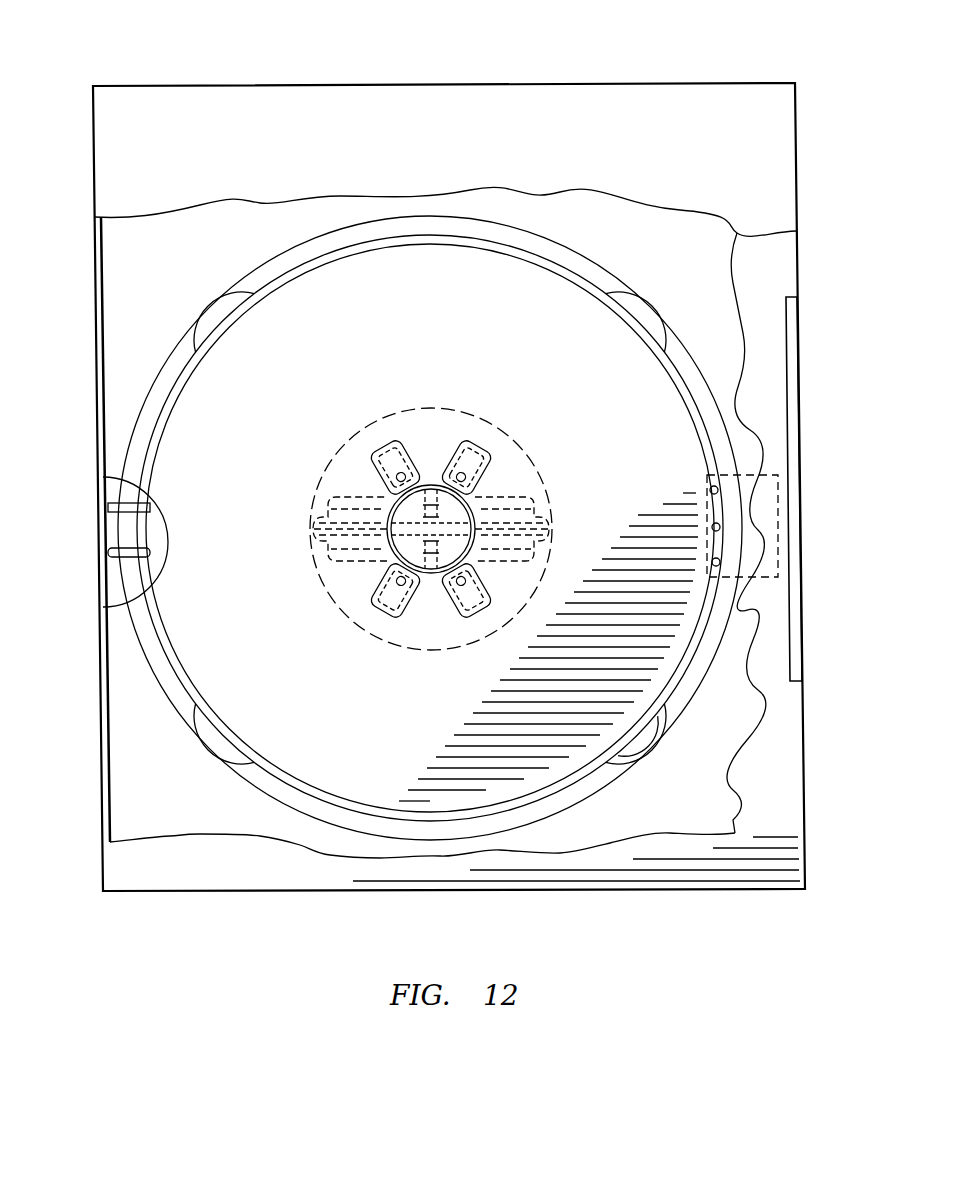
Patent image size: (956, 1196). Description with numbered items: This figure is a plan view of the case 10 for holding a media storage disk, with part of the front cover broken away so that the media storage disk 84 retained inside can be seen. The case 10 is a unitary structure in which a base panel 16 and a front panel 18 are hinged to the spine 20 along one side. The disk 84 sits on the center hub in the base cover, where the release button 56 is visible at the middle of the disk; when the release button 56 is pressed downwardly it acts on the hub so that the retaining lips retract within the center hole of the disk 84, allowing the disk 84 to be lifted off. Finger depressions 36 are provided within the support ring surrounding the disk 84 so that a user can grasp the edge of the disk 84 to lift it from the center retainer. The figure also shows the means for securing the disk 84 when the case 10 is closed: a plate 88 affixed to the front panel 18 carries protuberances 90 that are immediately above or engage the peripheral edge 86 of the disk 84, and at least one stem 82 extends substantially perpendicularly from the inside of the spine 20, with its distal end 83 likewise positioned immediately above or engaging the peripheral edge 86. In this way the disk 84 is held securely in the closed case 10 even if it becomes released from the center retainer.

The case 10 is at (408, 84).
The base panel 16 is at (187, 808).
The front panel 18 is at (553, 146).
The spine 20 is at (96, 309).
The finger depressions 36 is at (640, 313).
The release button 56 is at (463, 503).
The stem 82 is at (130, 502).
The distal end 83 is at (112, 607).
The media storage disk 84 is at (360, 345).
The peripheral edge 86 is at (577, 273).
The plate 88 is at (743, 567).
The protuberances 90 is at (719, 561).